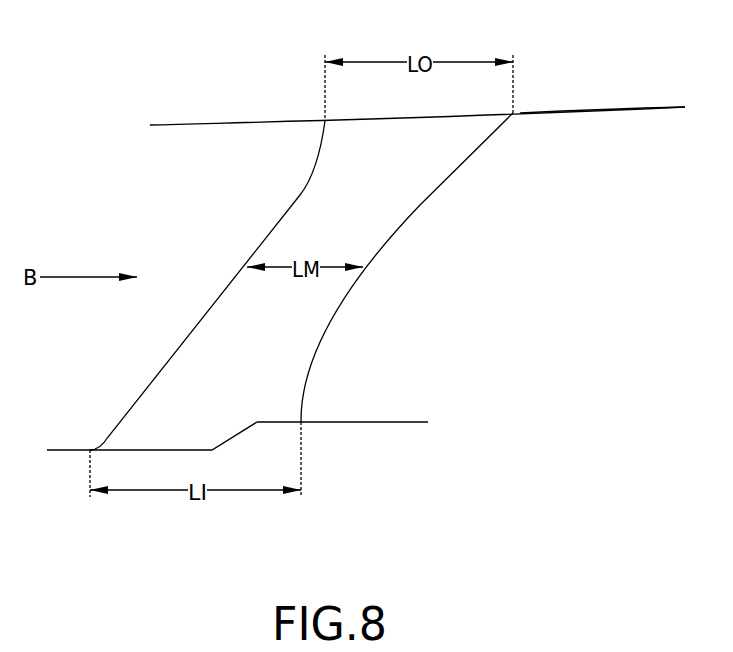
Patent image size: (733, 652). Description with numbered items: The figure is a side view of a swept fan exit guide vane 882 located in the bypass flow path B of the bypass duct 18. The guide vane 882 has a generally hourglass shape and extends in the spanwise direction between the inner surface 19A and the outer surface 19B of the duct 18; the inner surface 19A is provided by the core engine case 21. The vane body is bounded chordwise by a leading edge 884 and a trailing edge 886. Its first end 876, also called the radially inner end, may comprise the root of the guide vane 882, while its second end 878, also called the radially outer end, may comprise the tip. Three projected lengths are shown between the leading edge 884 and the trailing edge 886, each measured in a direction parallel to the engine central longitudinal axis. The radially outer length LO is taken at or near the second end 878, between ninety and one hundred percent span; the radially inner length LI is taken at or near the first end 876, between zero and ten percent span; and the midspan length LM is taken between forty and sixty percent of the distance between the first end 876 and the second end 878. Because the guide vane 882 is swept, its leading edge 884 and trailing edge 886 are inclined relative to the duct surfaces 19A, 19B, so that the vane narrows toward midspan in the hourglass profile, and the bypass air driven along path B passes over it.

The bypass duct 18 is at (202, 125).
The inner surface of duct 19A is at (380, 421).
The outer surface of duct 19B is at (585, 110).
The core engine case 21 is at (63, 450).
The first end 876 is at (130, 455).
The second end 878 is at (492, 108).
The swept guide vane 882 is at (370, 221).
The leading edge 884 is at (260, 247).
The trailing edge 886 is at (393, 230).